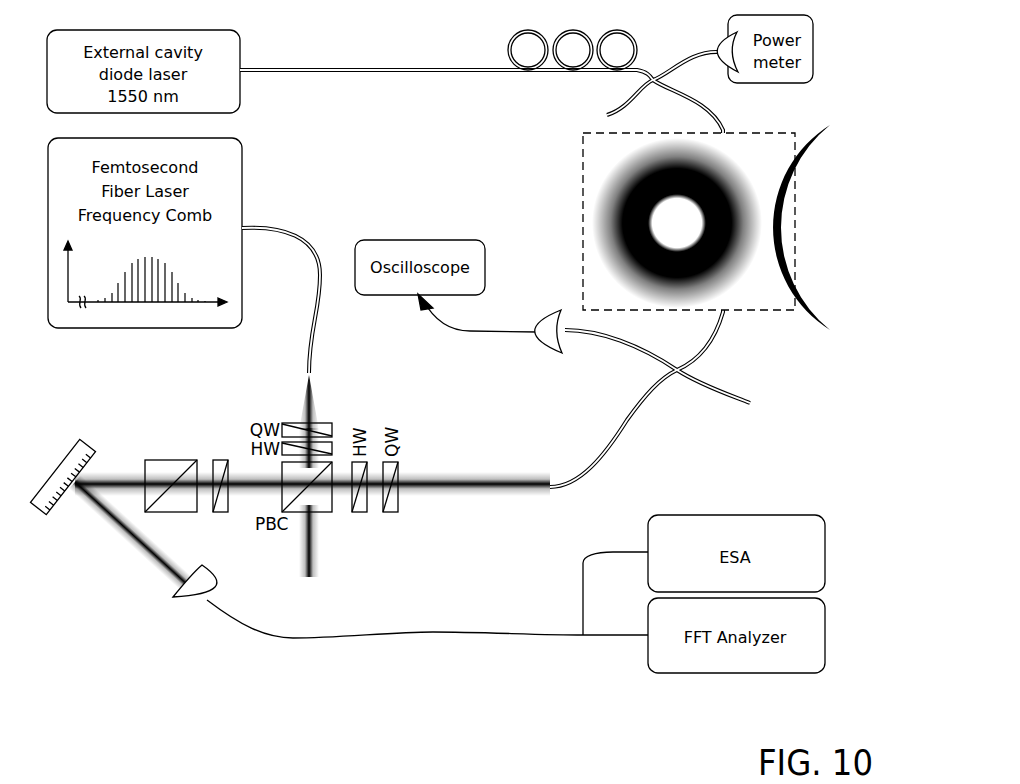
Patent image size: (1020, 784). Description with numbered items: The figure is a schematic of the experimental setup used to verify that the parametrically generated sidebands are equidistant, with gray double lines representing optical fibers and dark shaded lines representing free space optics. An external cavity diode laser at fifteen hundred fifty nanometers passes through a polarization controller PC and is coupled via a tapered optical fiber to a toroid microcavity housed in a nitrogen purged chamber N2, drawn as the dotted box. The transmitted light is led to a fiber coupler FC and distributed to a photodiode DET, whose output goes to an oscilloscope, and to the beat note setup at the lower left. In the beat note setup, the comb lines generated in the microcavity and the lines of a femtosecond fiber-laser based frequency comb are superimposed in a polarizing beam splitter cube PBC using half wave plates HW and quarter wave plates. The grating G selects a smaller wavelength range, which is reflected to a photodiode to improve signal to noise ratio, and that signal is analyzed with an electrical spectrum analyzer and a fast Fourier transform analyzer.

The nitrogen purged chamber N2 is at (721, 225).
The grating G is at (62, 476).
The polarizing beam splitter cube PBC is at (171, 474).
The half wave plate HW is at (220, 468).
The polarization controller PC is at (572, 38).
The fiber coupler FC is at (671, 201).
The photodiode DET is at (550, 343).